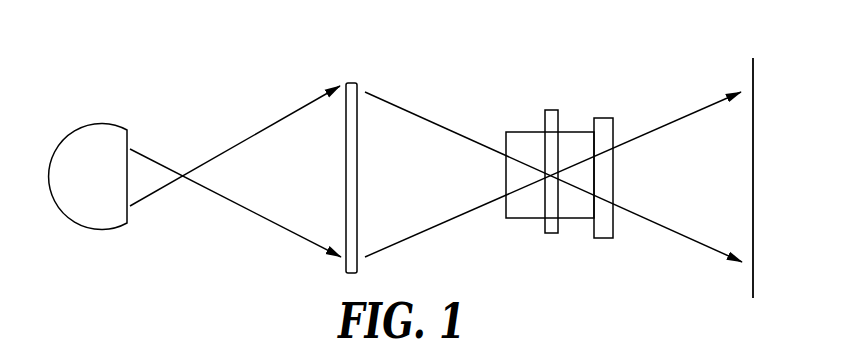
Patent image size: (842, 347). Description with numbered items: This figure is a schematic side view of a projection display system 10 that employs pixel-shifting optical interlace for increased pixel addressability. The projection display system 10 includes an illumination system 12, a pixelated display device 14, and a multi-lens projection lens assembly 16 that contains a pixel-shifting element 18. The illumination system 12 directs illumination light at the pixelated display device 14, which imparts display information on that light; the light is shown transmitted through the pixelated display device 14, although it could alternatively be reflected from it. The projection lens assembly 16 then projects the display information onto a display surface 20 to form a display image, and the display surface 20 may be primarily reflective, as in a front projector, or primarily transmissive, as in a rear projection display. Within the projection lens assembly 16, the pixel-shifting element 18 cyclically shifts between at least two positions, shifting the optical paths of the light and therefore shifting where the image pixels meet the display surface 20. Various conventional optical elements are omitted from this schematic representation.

The projection display system 10 is at (212, 70).
The illumination system 12 is at (102, 130).
The pixelated display device 14 is at (350, 82).
The multi-lens projection lens assembly 16 is at (605, 118).
The pixel-shifting element 18 is at (552, 110).
The display surface 20 is at (752, 74).